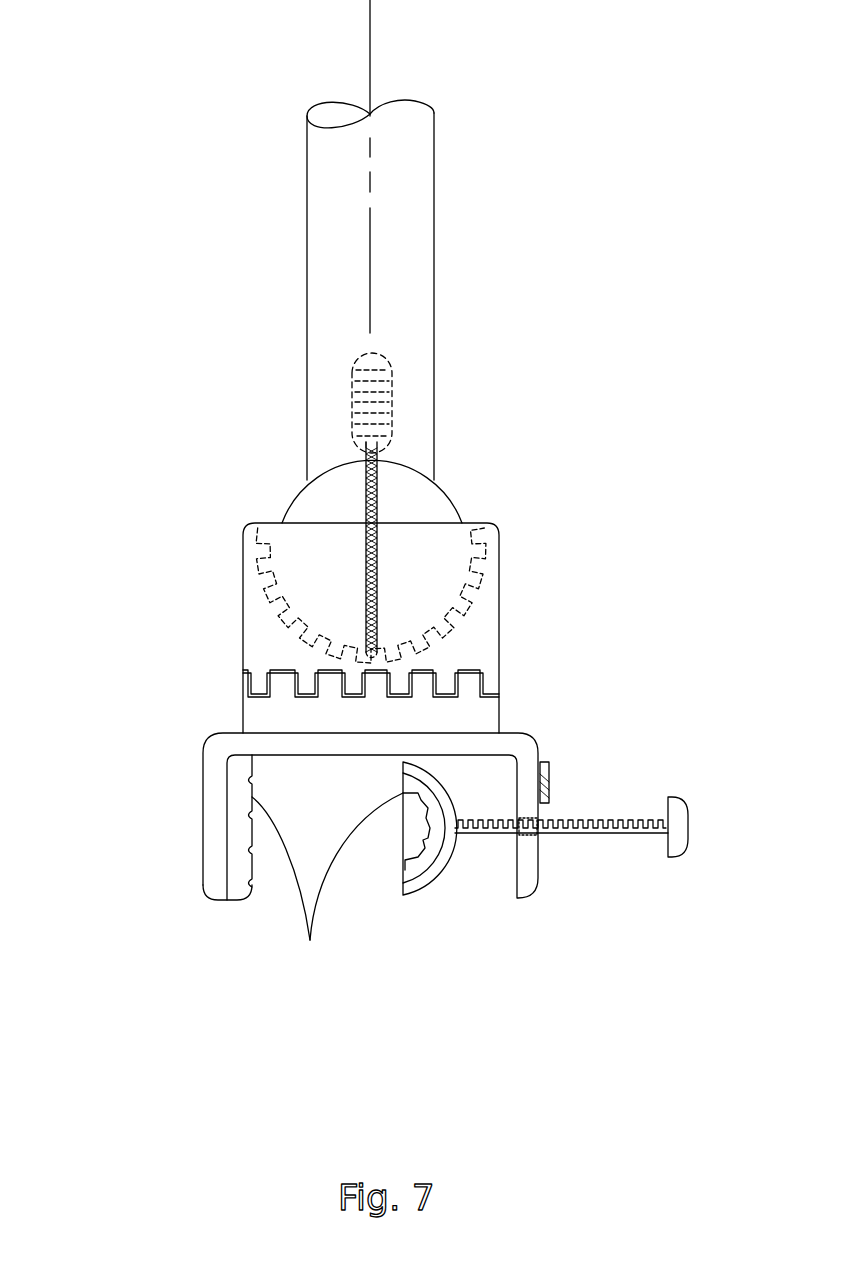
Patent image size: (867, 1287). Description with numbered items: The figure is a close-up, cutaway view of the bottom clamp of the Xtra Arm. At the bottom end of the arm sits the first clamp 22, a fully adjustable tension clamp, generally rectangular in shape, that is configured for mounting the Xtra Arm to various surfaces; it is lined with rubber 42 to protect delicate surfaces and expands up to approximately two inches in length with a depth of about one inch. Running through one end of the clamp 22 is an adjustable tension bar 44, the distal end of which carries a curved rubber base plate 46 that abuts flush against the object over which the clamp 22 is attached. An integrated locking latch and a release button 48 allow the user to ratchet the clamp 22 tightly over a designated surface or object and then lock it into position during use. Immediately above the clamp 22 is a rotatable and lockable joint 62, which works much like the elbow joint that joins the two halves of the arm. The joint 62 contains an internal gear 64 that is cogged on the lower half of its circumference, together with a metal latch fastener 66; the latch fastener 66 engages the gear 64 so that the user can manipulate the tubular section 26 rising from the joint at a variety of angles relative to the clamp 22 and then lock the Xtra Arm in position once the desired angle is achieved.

The clamp 22 is at (203, 827).
The tubular section 26 is at (307, 193).
The rubber 42 is at (383, 362).
The adjustable tension bar 44 is at (617, 833).
The curved rubber base plate 46 is at (423, 840).
The release button 48 is at (548, 770).
The rotatable and lockable joint 62 is at (293, 497).
The internal gear 64 is at (293, 600).
The metal latch fastener 66 is at (373, 627).